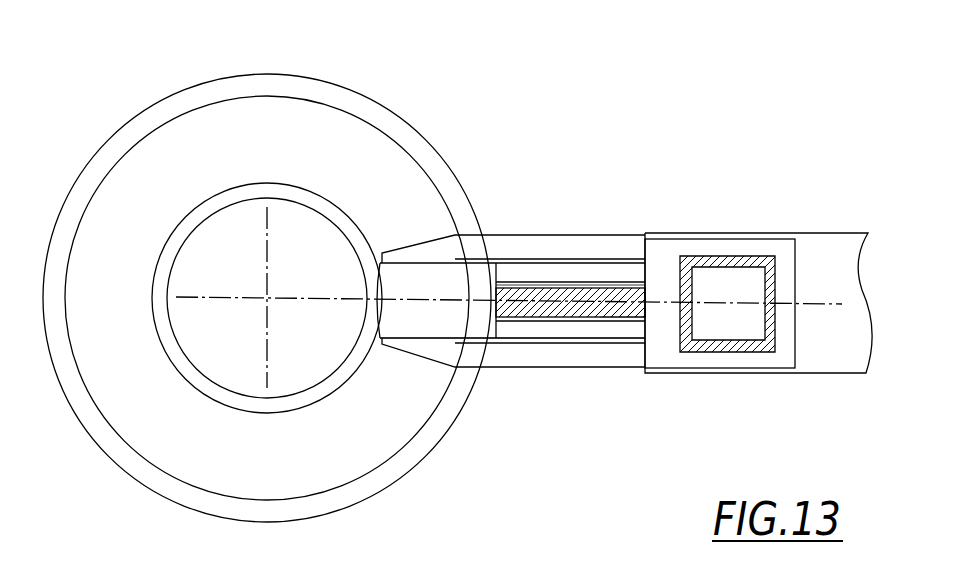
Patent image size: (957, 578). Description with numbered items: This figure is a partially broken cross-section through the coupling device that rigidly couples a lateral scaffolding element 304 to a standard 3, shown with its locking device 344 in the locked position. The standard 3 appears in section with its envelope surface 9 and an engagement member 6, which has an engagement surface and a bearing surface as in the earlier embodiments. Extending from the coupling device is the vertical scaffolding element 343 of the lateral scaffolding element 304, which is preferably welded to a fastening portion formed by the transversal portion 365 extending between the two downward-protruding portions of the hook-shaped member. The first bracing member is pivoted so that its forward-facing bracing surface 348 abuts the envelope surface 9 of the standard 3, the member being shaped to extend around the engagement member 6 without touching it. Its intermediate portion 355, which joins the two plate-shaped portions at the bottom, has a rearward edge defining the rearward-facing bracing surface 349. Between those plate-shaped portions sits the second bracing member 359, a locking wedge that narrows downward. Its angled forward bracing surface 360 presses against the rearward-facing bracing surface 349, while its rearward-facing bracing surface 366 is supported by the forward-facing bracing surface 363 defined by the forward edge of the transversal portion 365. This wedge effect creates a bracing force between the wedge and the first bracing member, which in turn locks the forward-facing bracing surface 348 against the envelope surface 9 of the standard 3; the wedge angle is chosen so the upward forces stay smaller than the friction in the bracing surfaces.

The engagement member 6 is at (137, 112).
The standard 3 is at (201, 192).
The envelope surface 9 is at (286, 184).
The forward-facing bracing surface 348 is at (363, 292).
The intermediate portion 355 is at (430, 292).
The rearward-facing bracing surface 349 is at (527, 290).
The second bracing member 359 is at (574, 280).
The transversal portion 365 is at (662, 253).
The lateral scaffolding element 304 is at (822, 384).
The vertical scaffolding element 343 is at (730, 352).
The forward bracing surface 360 is at (496, 314).
The locking device 344 is at (547, 352).
The forward-facing bracing surface 363 is at (645, 316).
The rearward-facing bracing surface 366 is at (645, 310).